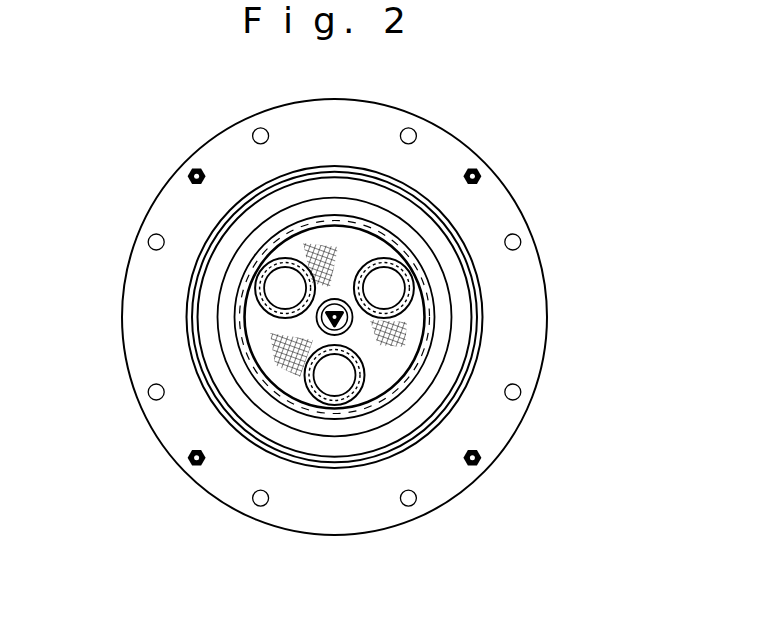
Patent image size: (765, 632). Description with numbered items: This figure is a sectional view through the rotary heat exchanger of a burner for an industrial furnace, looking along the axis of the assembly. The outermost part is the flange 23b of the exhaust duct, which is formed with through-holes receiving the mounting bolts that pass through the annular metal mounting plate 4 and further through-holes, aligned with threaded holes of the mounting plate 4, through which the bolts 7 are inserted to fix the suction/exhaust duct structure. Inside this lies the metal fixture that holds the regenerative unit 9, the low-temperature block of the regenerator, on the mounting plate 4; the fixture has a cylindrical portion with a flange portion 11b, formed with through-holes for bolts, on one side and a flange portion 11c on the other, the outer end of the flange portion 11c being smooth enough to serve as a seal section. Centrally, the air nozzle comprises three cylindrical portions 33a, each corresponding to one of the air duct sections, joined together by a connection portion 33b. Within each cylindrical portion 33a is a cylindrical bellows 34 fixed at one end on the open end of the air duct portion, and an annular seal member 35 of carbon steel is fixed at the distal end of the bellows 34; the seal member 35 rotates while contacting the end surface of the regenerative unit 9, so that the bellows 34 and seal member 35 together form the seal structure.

The flange 23b is at (443, 143).
The bolt 7 is at (198, 172).
The mounting plate 4 is at (458, 280).
The flange portion 11b is at (443, 345).
The flange portion 11c is at (395, 392).
The connection portion 33b is at (255, 378).
The regenerative unit 9 is at (277, 367).
The cylindrical portion 33a is at (408, 262).
The bellows 34 is at (414, 292).
The seal member 35 is at (405, 283).